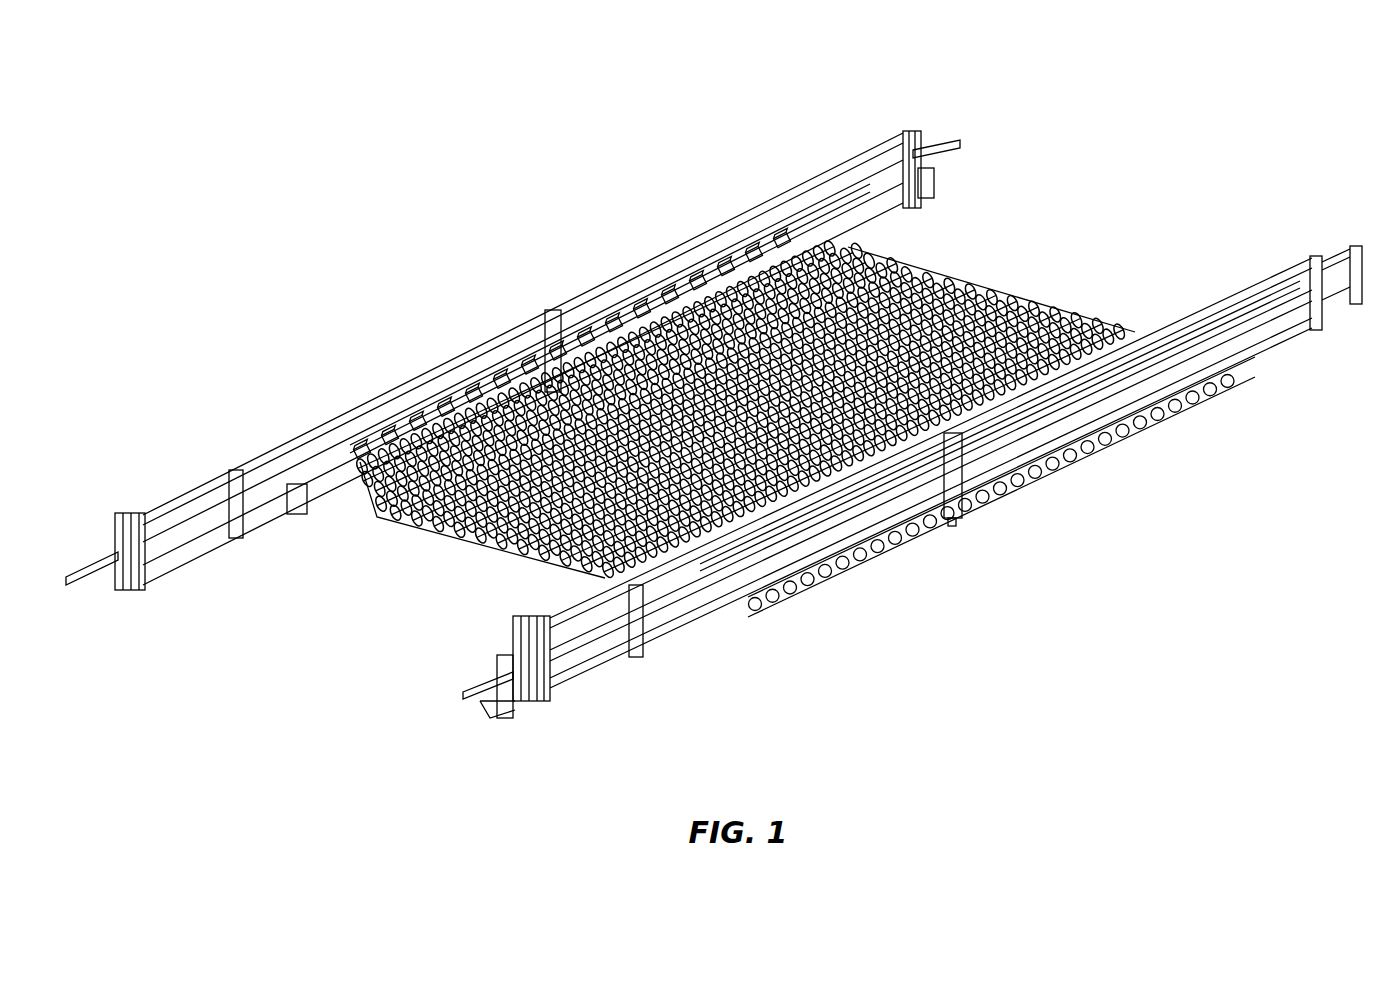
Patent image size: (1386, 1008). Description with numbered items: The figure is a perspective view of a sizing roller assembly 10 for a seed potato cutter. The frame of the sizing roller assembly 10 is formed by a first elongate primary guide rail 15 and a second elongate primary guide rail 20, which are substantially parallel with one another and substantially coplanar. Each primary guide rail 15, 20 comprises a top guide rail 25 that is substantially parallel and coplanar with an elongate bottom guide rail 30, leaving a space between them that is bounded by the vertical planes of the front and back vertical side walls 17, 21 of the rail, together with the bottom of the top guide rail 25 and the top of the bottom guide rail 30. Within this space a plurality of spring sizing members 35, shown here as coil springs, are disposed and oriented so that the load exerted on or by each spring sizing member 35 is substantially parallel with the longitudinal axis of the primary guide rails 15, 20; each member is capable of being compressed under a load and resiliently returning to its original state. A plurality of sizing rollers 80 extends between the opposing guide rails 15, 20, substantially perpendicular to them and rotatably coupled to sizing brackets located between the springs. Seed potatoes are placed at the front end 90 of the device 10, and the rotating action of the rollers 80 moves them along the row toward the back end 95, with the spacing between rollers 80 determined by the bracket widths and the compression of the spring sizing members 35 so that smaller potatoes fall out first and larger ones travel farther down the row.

The sizing roller assembly 10 is at (245, 745).
The first elongate primary guide rail 15 is at (1263, 270).
The front vertical side wall 17 is at (1323, 263).
The second elongate primary guide rail 20 is at (868, 152).
The back vertical side wall 21 is at (825, 193).
The top guide rail 25 is at (777, 203).
The bottom guide rail 30 is at (220, 540).
The spring sizing member 35 is at (375, 415).
The sizing roller 80 is at (660, 285).
The front end 90 is at (385, 520).
The back end 95 is at (925, 250).